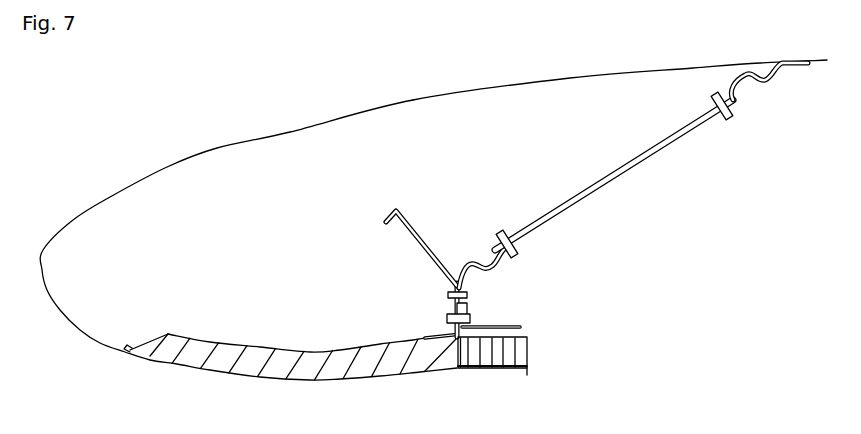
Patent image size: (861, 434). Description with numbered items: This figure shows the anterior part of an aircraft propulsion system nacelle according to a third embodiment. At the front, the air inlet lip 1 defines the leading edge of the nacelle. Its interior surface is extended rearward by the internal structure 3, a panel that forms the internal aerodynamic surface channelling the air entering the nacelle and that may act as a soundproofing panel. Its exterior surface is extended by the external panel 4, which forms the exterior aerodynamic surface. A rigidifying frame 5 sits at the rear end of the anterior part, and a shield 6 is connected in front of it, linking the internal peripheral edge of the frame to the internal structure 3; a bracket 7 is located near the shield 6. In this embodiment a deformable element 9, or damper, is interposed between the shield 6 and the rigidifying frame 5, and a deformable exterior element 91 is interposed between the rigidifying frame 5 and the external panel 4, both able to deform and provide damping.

The air inlet lip 1 is at (73, 330).
The internal structure 3 is at (345, 365).
The external panel 4 is at (627, 70).
The rigidifying frame 5 is at (607, 182).
The shield 6 is at (415, 223).
The bracket 7 is at (497, 333).
The deformable element 9 is at (480, 270).
The deformable exterior element 91 is at (778, 77).